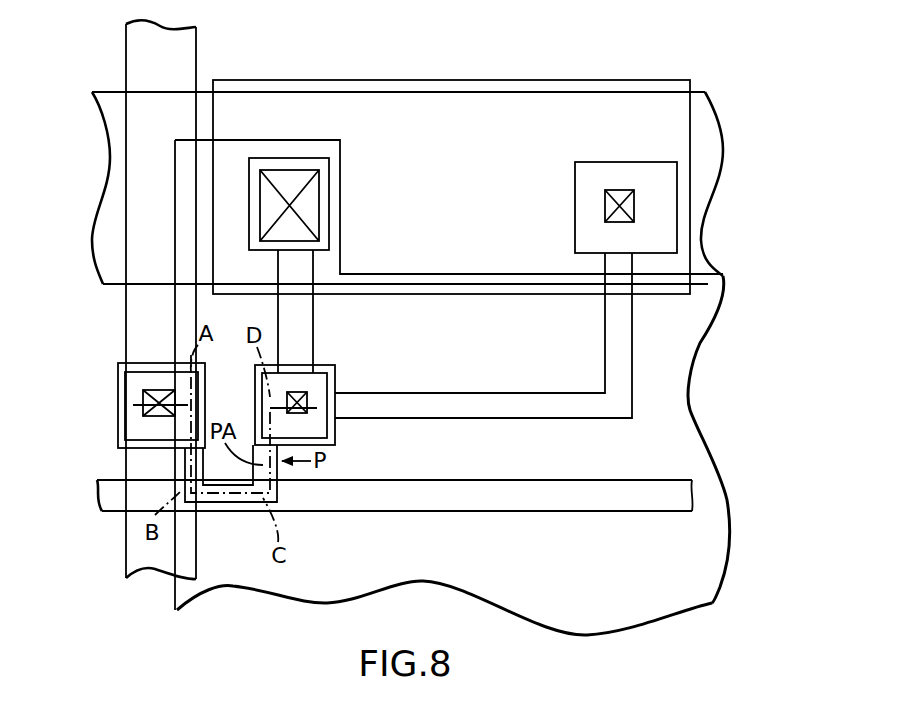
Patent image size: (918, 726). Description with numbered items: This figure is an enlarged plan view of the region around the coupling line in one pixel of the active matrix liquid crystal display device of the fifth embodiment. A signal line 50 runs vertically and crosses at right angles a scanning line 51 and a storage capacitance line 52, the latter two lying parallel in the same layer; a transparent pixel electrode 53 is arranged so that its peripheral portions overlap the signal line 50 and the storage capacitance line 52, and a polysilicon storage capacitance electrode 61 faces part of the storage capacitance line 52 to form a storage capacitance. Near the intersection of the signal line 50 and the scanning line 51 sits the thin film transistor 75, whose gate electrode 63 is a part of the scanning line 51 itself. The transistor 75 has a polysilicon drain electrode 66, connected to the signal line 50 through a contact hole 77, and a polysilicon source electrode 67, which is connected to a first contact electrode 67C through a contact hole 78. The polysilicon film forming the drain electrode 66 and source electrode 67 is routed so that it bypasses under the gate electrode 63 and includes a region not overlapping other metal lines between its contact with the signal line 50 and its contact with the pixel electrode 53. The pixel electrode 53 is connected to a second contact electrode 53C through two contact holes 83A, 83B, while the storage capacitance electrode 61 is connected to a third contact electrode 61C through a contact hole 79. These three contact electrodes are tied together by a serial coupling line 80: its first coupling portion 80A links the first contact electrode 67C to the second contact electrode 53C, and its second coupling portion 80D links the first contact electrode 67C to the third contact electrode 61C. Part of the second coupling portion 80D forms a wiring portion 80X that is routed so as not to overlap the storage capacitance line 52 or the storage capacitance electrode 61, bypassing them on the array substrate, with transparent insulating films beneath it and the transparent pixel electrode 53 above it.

The signal line 50 is at (133, 52).
The scanning line 51 is at (95, 494).
The storage capacitance line 52 is at (110, 213).
The pixel electrode 53 is at (714, 562).
The second contact electrode 53C is at (262, 158).
The storage capacitance electrode 61 is at (520, 82).
The third contact electrode 61C is at (653, 163).
The gate electrode 63 is at (232, 508).
The drain electrode 66 is at (119, 402).
The source electrode 67 is at (337, 430).
The first contact electrode 67C is at (318, 430).
The thin film transistor 75 is at (116, 416).
The contact hole 77 is at (145, 398).
The contact hole 78 is at (308, 397).
The contact hole 79 is at (618, 190).
The coupling line 80 is at (455, 360).
The first coupling portion 80A is at (312, 340).
The wiring portion 80X is at (531, 392).
The second coupling portion 80D is at (503, 408).
The contact hole 83A is at (293, 177).
The contact hole 83B is at (330, 173).